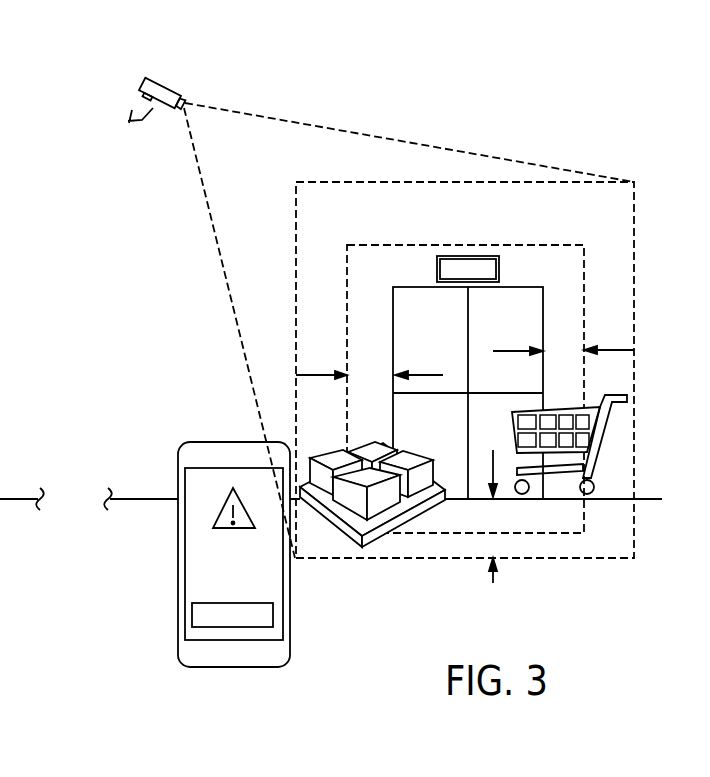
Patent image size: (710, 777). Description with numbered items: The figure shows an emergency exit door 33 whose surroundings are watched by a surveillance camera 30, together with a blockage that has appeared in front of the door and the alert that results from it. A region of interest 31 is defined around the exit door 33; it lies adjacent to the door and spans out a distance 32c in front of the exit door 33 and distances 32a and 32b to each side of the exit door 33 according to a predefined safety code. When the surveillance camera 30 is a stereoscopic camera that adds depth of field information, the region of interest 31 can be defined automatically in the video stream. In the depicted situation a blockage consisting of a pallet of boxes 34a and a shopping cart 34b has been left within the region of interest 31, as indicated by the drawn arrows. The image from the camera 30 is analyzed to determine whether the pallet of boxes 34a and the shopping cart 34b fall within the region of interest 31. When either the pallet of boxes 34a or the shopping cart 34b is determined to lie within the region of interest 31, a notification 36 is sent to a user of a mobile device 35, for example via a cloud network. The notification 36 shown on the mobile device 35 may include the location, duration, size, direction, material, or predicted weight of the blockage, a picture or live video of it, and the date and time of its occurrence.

The surveillance camera 30 is at (165, 80).
The region of interest 31 is at (584, 260).
The distance to one side of the exit door 32a is at (430, 363).
The distance to the other side of the exit door 32b is at (508, 339).
The distance in front of the exit door 32c is at (495, 460).
The emergency exit door 33 is at (406, 287).
The pallet of boxes 34a is at (370, 538).
The shopping cart 34b is at (600, 440).
The mobile device 35 is at (192, 442).
The notification 36 is at (215, 567).